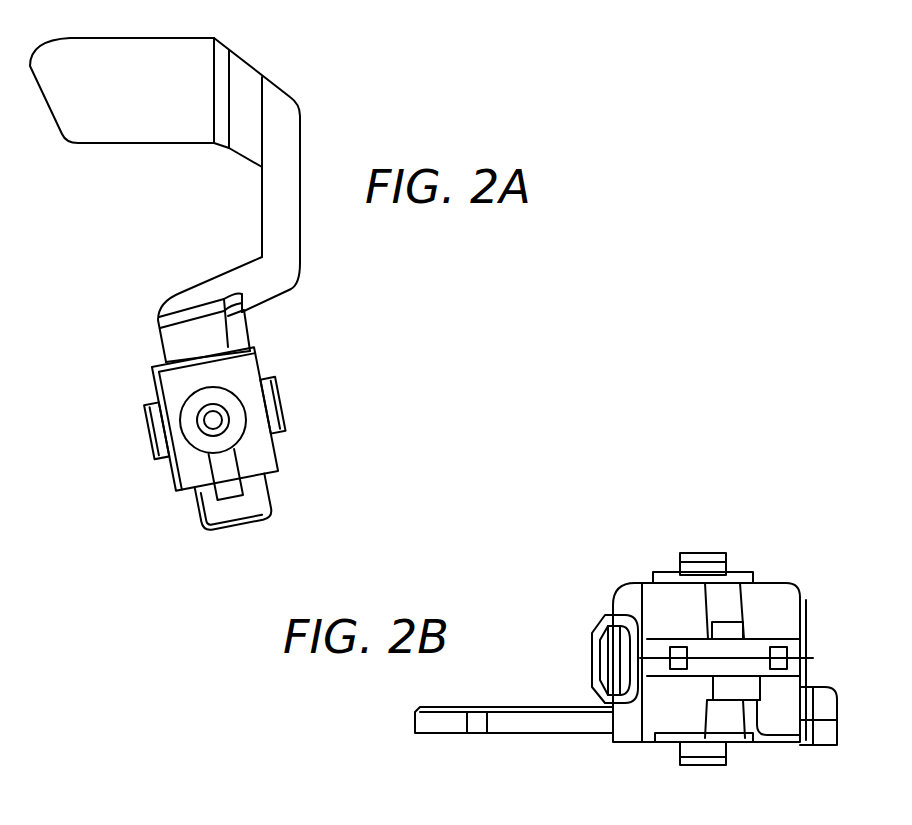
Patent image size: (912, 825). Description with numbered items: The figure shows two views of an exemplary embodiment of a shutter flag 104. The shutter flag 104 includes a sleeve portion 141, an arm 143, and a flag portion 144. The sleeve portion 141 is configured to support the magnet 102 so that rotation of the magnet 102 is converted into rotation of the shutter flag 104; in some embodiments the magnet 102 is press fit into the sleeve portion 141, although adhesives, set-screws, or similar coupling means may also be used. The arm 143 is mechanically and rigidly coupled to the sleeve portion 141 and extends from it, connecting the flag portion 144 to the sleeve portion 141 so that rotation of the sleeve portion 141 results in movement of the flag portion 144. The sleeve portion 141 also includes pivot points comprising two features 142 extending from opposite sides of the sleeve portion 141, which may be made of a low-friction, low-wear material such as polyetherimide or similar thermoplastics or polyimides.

In FIG. 2A, the shutter flag 104 is at (342, 105).
In FIG. 2B, the shutter flag 104 is at (576, 601).
In FIG. 2A, the magnet 102 is at (147, 437).
In FIG. 2B, the magnet 102 is at (598, 655).
In FIG. 2A, the sleeve portion 141 is at (168, 382).
In FIG. 2B, the sleeve portion 141 is at (763, 593).
In FIG. 2B, the pivot points 142 is at (703, 568).
In FIG. 2A, the arm 143 is at (275, 202).
In FIG. 2A, the flag portion 144 is at (148, 125).
In FIG. 2B, the flag portion 144 is at (447, 720).